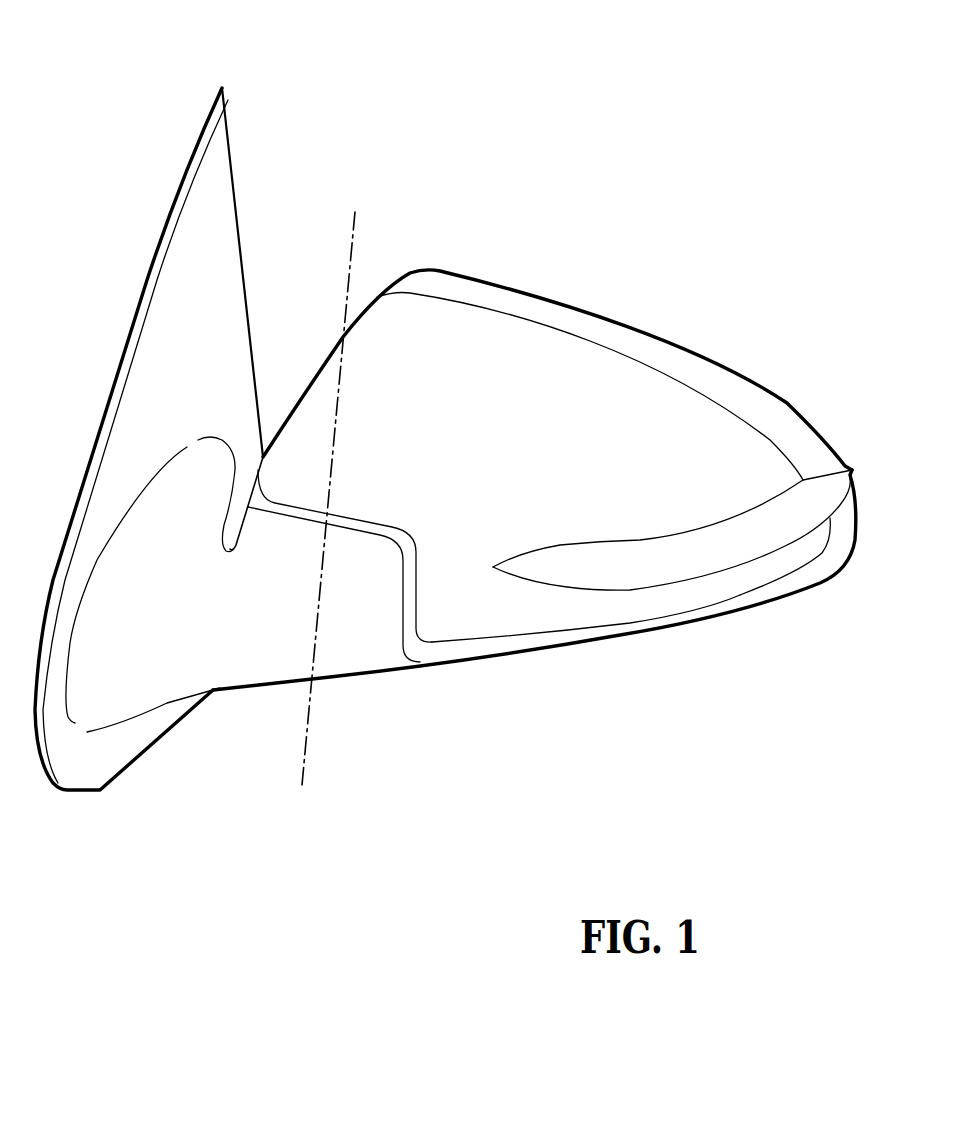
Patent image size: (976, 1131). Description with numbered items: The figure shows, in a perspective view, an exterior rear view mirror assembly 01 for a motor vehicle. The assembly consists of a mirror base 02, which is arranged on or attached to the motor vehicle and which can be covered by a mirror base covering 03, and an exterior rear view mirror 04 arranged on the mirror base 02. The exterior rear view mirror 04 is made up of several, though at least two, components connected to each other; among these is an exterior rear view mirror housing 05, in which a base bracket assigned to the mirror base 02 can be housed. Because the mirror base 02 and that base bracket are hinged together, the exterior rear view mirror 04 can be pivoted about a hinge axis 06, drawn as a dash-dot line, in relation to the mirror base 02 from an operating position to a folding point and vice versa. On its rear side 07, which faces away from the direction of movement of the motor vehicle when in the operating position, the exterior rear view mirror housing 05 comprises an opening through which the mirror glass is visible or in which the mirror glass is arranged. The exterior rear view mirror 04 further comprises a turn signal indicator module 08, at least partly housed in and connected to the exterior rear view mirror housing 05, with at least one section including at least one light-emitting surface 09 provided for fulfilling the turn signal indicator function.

The exterior rear view mirror assembly 01 is at (94, 110).
The mirror base 02 is at (245, 673).
The mirror base covering 03 is at (187, 245).
The exterior rear view mirror 04 is at (473, 630).
The exterior rear view mirror housing 05 is at (692, 413).
The hinge axis 06 is at (353, 232).
The rear side 07 is at (532, 290).
The turn signal indicator module 08 is at (713, 558).
The light-emitting surface 09 is at (783, 537).